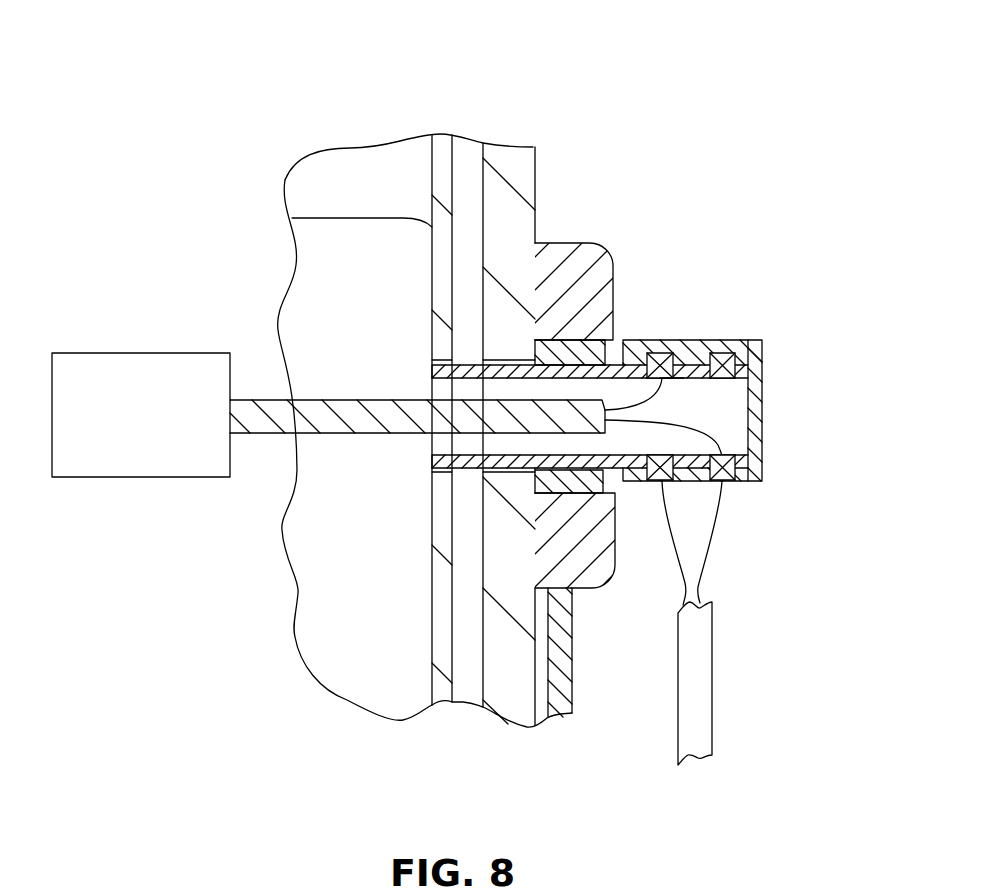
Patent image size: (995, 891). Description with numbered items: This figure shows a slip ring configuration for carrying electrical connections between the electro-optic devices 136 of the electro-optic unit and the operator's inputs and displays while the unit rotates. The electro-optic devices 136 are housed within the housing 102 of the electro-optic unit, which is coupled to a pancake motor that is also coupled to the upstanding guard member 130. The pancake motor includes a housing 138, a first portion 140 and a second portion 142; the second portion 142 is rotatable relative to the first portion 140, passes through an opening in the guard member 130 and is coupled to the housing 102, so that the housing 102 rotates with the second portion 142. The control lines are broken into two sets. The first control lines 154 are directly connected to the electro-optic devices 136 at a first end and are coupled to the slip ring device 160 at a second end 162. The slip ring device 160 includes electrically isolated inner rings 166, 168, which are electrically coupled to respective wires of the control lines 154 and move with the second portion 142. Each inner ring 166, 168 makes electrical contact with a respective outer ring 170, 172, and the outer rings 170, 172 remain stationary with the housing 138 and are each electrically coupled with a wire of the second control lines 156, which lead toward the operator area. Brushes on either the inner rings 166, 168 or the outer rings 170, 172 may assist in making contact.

The housing 102 is at (442, 142).
The guard member 130 is at (512, 170).
The electro-optic devices 136 is at (132, 478).
The housing 138 is at (558, 243).
The first portion 140 is at (597, 340).
The second portion 142 is at (430, 372).
The control lines 154 is at (278, 400).
The control lines 156 is at (718, 693).
The slip ring device 160 is at (761, 370).
The second end 162 is at (592, 437).
The inner ring 166 is at (672, 382).
The inner ring 168 is at (727, 382).
The outer ring 170 is at (662, 347).
The outer ring 172 is at (723, 347).